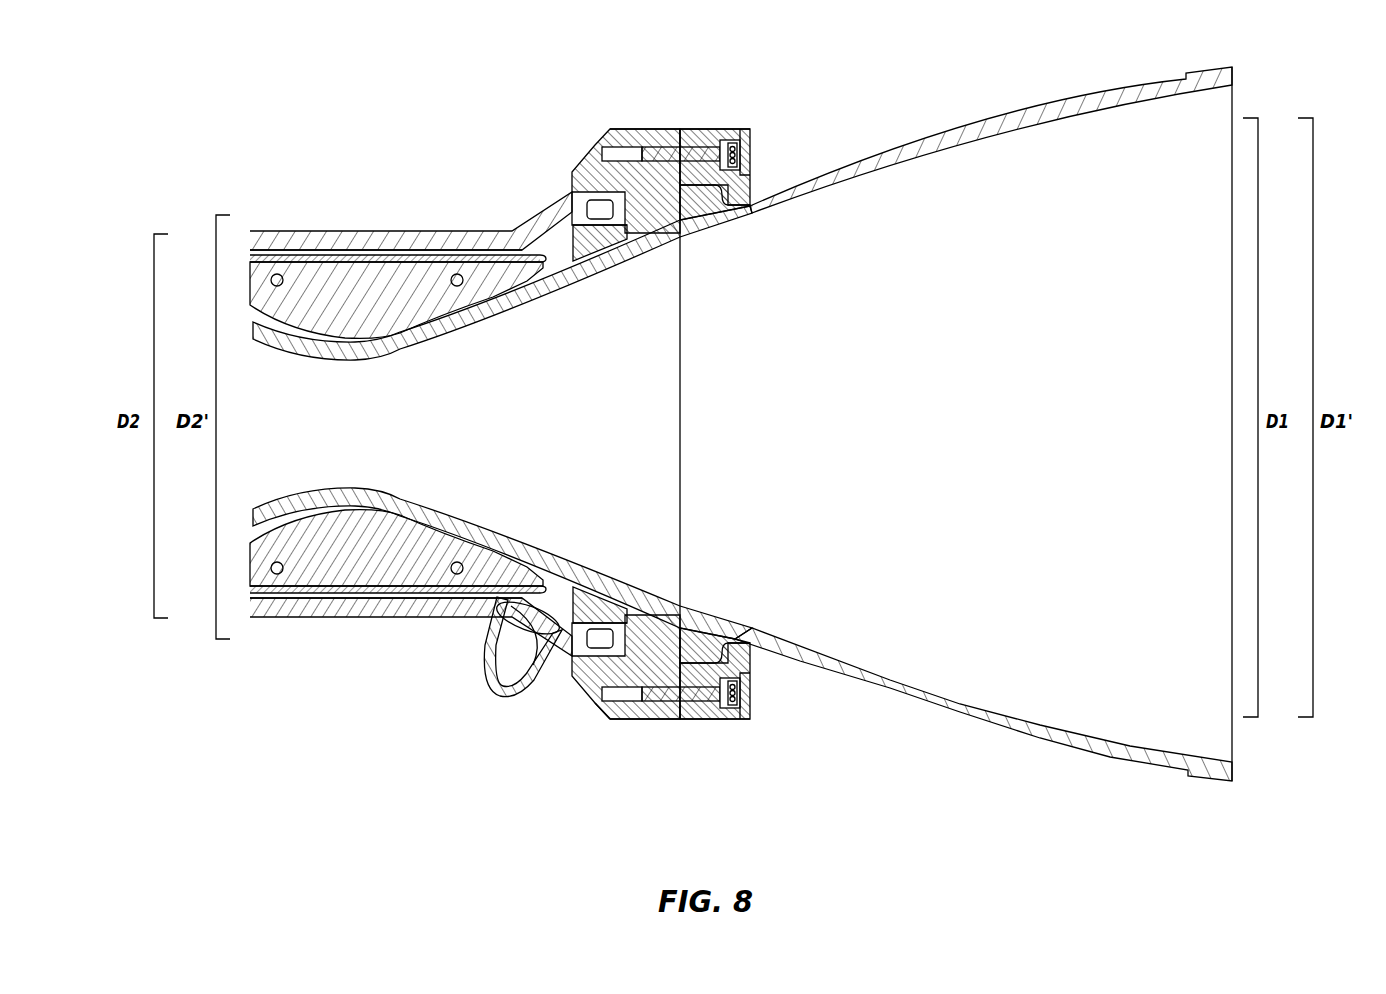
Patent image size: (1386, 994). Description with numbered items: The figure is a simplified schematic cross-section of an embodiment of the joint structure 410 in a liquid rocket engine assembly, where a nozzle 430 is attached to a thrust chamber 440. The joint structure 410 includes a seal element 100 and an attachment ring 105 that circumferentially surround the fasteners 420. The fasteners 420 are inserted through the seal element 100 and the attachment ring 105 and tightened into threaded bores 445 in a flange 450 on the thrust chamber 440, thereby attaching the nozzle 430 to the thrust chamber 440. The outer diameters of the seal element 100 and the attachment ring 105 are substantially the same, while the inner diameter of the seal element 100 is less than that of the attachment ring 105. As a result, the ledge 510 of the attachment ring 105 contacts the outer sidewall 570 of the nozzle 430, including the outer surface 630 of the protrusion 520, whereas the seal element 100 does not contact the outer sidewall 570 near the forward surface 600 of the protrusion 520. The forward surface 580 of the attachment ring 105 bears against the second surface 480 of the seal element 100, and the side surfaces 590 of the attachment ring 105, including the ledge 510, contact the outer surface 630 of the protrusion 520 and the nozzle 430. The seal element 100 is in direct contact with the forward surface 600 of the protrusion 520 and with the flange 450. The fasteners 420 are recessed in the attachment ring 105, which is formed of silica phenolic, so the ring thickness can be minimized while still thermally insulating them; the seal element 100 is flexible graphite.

The seal element 100 is at (682, 129).
The attachment ring 105 is at (725, 725).
The joint structure 410 is at (597, 733).
The fasteners 420 is at (743, 695).
The nozzle 430 is at (1043, 742).
The thrust chamber 440 is at (408, 230).
The threaded bore 445 is at (632, 719).
The flange 450 is at (572, 176).
The second surface 480 is at (587, 630).
The ledge 510 is at (755, 182).
The protrusion 520 is at (708, 129).
The outer sidewall 570 is at (1007, 118).
The forward surface 580 is at (692, 129).
The side surfaces 590 is at (700, 720).
The forward surface 600 is at (596, 668).
The outer surface 630 is at (748, 129).